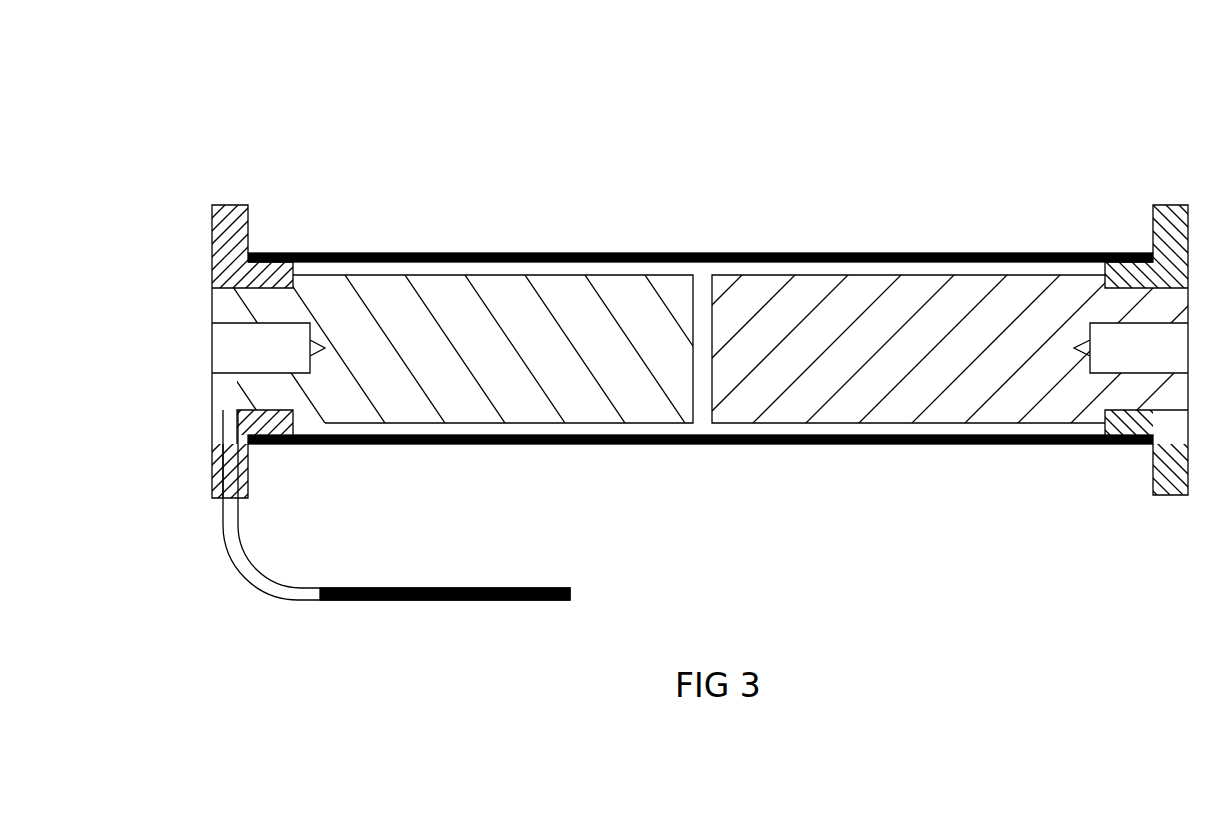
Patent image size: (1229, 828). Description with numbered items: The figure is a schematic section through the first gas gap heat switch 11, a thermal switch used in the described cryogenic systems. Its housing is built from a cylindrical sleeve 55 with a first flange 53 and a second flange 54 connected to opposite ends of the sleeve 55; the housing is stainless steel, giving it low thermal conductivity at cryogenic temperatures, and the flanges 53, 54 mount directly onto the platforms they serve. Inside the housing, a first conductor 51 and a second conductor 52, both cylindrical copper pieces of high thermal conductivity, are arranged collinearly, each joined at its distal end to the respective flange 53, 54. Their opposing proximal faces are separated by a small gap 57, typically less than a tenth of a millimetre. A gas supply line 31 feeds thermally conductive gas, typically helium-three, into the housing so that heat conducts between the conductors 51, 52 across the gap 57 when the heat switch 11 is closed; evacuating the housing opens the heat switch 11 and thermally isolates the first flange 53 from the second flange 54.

The first gas gap heat switch 11 is at (396, 124).
The gas supply line 31 is at (237, 538).
The first conductor 51 is at (538, 292).
The second conductor 52 is at (978, 290).
The first flange 53 is at (231, 250).
The second flange 54 is at (1165, 226).
The cylindrical sleeve 55 is at (894, 445).
The gap 57 is at (702, 410).